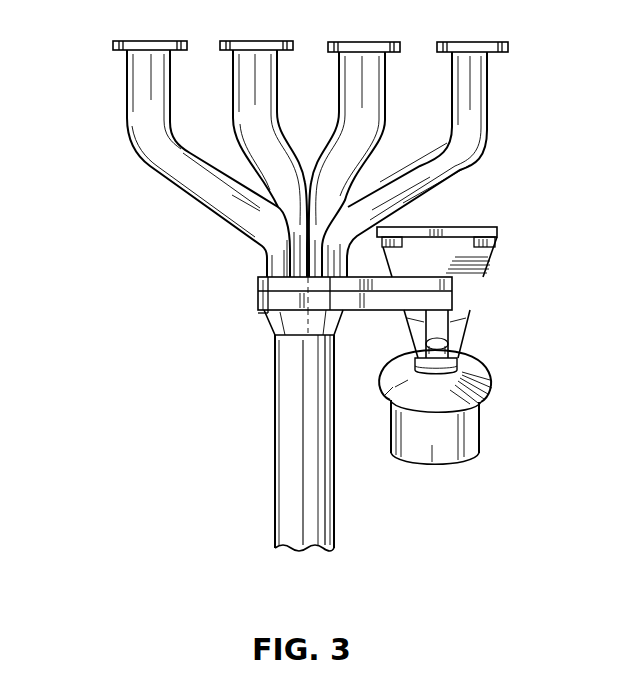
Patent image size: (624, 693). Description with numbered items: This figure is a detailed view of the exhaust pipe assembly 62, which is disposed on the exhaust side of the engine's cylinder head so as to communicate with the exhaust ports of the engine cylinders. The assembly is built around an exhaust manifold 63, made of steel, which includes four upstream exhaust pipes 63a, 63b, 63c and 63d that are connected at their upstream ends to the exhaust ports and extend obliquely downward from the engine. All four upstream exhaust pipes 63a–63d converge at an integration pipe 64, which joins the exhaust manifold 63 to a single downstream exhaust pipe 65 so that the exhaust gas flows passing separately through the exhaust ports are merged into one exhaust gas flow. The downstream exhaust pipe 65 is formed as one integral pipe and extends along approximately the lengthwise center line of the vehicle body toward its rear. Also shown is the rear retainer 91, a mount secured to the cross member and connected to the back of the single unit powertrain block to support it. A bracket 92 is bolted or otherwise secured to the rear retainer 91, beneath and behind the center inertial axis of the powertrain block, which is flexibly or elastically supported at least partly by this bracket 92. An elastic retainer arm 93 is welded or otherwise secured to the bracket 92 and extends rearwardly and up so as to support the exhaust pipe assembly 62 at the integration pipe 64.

The exhaust pipe assembly 62 is at (165, 261).
The exhaust manifold 63 is at (188, 200).
The upstream exhaust pipe 63a is at (136, 104).
The upstream exhaust pipe 63b is at (262, 116).
The upstream exhaust pipe 63c is at (365, 114).
The upstream exhaust pipe 63d is at (479, 121).
The integration pipe 64 is at (270, 320).
The downstream exhaust pipe 65 is at (274, 469).
The rear retainer 91 is at (478, 427).
The bracket 92 is at (478, 278).
The elastic retainer arm 93 is at (258, 303).